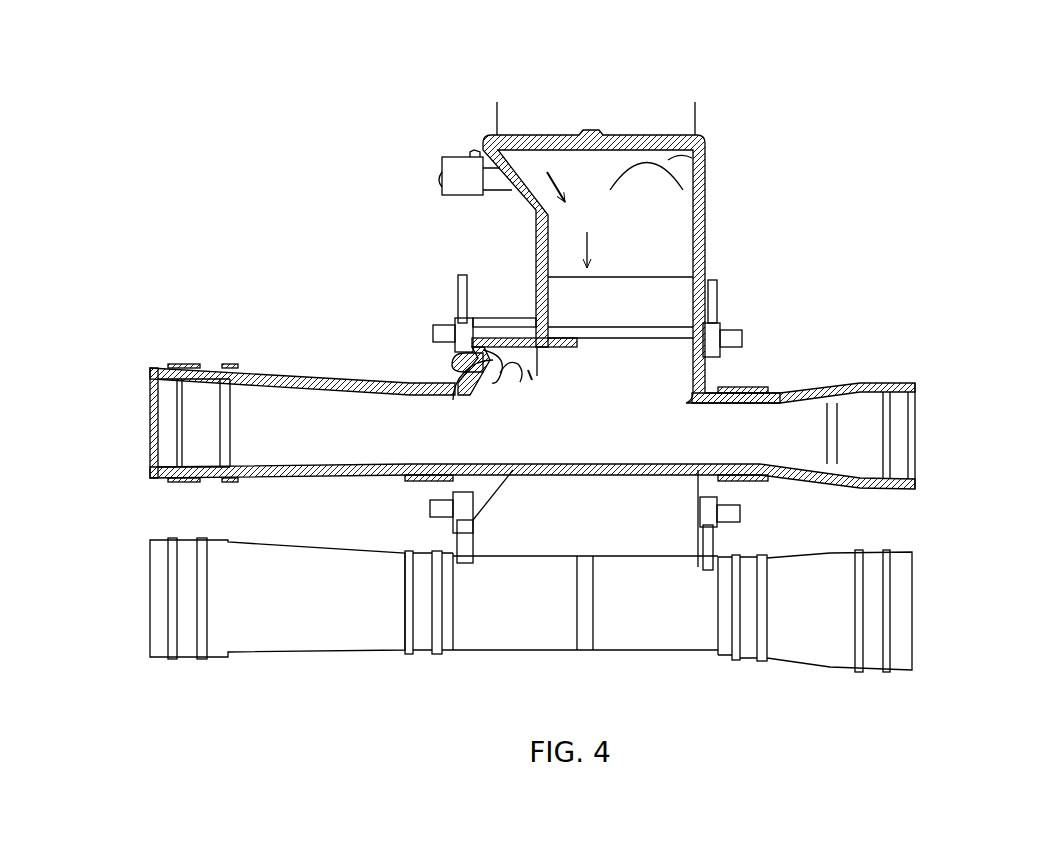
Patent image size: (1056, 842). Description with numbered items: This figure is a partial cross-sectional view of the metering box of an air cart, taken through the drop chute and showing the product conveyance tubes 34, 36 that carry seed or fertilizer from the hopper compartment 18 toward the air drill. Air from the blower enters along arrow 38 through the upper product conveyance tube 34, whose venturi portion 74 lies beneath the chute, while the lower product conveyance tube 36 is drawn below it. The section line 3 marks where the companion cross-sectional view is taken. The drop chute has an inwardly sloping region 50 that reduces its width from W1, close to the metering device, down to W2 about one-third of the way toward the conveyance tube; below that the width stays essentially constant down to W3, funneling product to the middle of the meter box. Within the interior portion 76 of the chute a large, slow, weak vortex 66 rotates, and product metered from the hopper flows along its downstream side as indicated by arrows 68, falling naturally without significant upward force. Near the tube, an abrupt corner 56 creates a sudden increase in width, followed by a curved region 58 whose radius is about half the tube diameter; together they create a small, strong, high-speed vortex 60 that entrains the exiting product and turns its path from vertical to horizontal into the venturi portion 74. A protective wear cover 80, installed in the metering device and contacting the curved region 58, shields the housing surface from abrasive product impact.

The section line 3- 3 is at (592, 93).
The hopper compartment 18 is at (113, 422).
The upper product conveyance tube 34 is at (870, 383).
The lower product conveyance tube 36 is at (913, 578).
The air flow arrow 38 is at (945, 410).
The inwardly sloping region 50 is at (510, 193).
The abrupt corner 56 is at (537, 376).
The curved region 58 is at (478, 340).
The small strong vortex 60 is at (500, 372).
The large vortex 66 is at (703, 160).
The product flow arrow 68 is at (557, 183).
The venturi portion 74 is at (515, 418).
The interior portion of the drop chute 76 is at (635, 380).
The protective wear cover 80 is at (468, 403).
The drop chute width adjacent the metering device W1 is at (497, 110).
The drop chute width at end of slope W2 is at (548, 222).
The constant drop chute width W3 is at (693, 345).